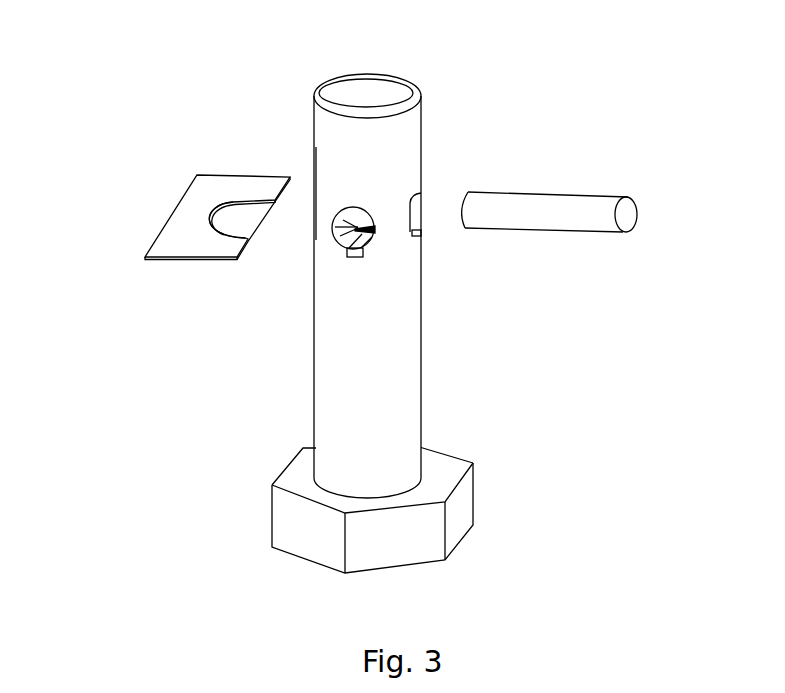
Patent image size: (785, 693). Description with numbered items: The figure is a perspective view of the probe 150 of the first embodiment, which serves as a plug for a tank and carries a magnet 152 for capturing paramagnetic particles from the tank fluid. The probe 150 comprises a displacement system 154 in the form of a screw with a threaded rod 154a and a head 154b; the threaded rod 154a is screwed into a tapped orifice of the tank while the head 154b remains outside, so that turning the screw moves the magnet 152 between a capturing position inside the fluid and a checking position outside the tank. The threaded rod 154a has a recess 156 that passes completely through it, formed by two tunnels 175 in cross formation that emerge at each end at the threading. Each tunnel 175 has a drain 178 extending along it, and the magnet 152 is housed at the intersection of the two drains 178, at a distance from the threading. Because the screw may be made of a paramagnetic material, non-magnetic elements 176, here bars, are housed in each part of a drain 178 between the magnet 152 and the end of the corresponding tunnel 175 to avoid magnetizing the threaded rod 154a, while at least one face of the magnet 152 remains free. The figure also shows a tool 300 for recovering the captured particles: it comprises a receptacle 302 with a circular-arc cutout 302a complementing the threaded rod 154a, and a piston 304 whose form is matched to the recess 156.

The probe 150 is at (532, 82).
The displacement system 154 is at (542, 393).
The threaded rod 154a is at (356, 93).
The head 154b is at (444, 511).
The recess 156 is at (358, 226).
The magnet 152 is at (358, 233).
The element produced in a non-magnetic material 176 is at (363, 248).
The drain 178 is at (356, 258).
The tunnel 175 is at (421, 232).
The tool 300 is at (613, 130).
The receptacle 302 is at (177, 237).
The cutout 302a is at (232, 200).
The piston 304 is at (603, 203).